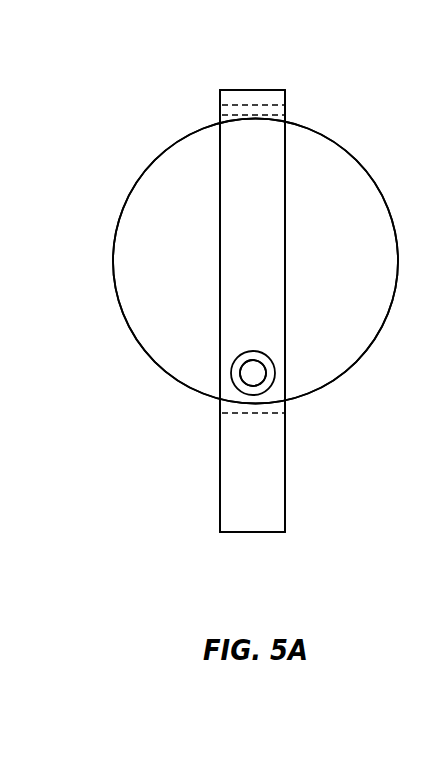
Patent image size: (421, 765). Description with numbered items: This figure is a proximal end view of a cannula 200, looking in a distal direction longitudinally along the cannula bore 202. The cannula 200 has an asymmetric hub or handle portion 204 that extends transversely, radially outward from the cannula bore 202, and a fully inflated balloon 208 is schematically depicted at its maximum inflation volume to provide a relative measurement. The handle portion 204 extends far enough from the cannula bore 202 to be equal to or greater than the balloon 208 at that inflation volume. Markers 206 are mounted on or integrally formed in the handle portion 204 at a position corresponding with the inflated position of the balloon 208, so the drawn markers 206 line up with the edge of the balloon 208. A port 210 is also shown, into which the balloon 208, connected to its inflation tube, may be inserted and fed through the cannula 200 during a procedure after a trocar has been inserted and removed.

The cannula 200 is at (297, 172).
The cannula bore 202 is at (265, 382).
The handle portion 204 is at (230, 157).
The markers 206 is at (262, 107).
The balloon 208 is at (180, 332).
The port 210 is at (233, 386).